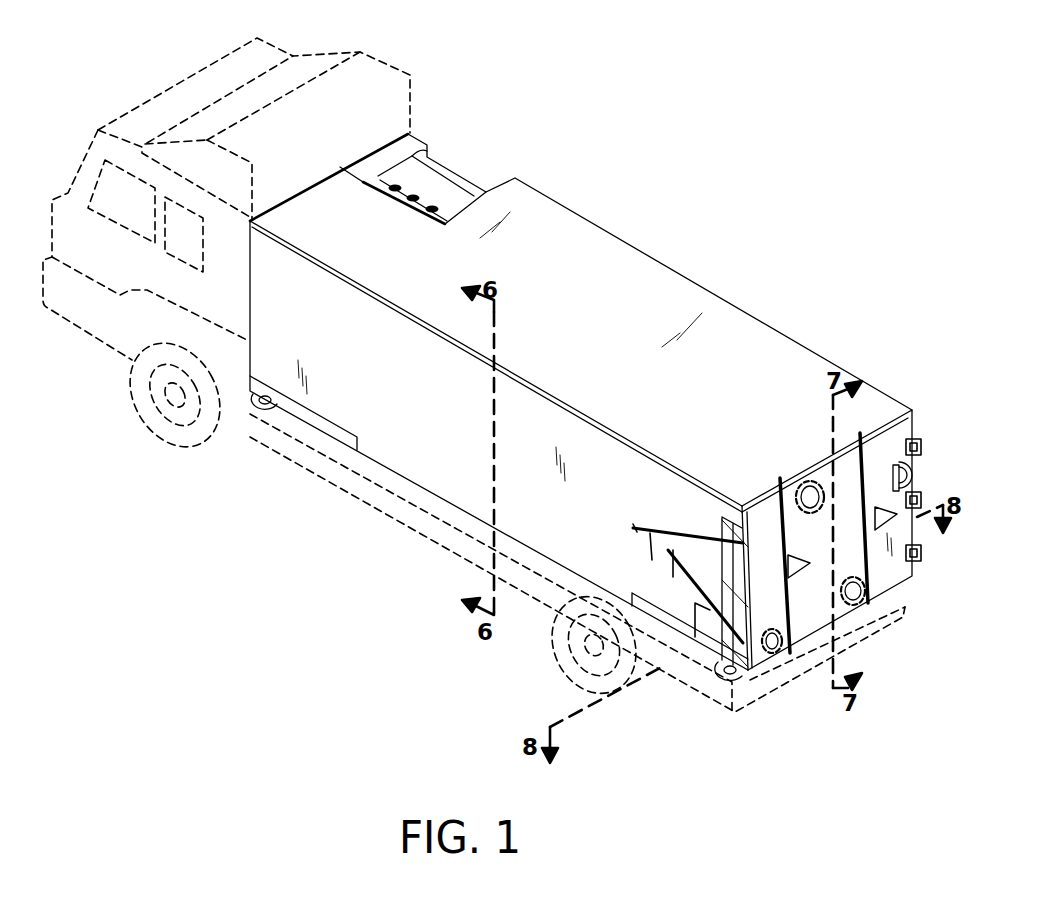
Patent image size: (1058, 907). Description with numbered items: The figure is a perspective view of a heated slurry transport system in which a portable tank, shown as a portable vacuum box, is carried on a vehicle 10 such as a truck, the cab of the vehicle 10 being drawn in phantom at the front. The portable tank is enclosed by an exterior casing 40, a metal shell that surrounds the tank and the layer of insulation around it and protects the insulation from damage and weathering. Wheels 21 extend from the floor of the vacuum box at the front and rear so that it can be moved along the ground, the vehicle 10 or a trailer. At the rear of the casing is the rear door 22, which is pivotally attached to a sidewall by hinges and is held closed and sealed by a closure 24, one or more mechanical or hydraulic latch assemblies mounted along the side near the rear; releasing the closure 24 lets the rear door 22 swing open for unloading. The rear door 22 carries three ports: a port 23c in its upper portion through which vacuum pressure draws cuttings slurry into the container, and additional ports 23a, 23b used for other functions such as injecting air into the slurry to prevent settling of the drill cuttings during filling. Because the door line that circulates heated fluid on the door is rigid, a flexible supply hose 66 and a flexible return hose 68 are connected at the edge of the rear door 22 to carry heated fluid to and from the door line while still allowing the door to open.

The vehicle 10 is at (386, 62).
The wheels 21 is at (257, 410).
The rear door 22 is at (882, 580).
The port 23a is at (778, 650).
The port 23b is at (860, 600).
The port 23c is at (805, 484).
The closure 24 is at (690, 575).
The exterior casing 40 is at (737, 352).
The flexible supply hose 66 is at (917, 475).
The flexible return hose 68 is at (917, 460).